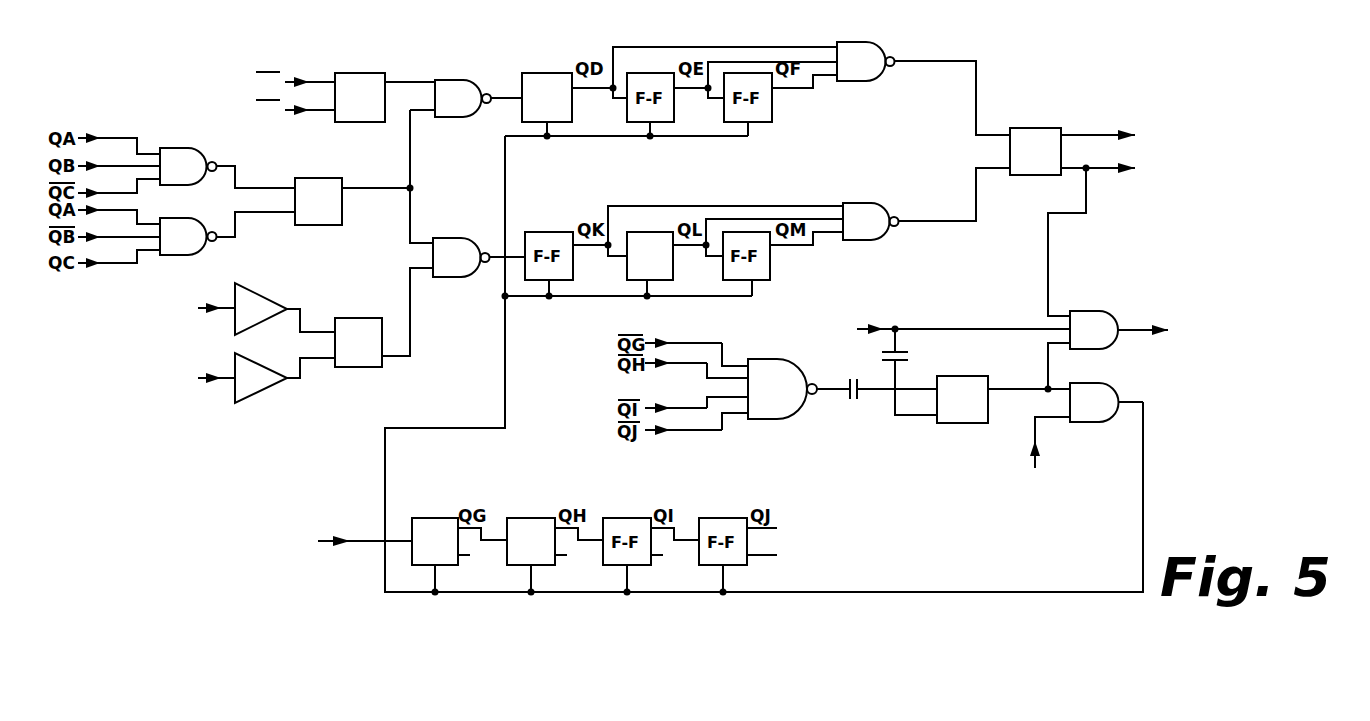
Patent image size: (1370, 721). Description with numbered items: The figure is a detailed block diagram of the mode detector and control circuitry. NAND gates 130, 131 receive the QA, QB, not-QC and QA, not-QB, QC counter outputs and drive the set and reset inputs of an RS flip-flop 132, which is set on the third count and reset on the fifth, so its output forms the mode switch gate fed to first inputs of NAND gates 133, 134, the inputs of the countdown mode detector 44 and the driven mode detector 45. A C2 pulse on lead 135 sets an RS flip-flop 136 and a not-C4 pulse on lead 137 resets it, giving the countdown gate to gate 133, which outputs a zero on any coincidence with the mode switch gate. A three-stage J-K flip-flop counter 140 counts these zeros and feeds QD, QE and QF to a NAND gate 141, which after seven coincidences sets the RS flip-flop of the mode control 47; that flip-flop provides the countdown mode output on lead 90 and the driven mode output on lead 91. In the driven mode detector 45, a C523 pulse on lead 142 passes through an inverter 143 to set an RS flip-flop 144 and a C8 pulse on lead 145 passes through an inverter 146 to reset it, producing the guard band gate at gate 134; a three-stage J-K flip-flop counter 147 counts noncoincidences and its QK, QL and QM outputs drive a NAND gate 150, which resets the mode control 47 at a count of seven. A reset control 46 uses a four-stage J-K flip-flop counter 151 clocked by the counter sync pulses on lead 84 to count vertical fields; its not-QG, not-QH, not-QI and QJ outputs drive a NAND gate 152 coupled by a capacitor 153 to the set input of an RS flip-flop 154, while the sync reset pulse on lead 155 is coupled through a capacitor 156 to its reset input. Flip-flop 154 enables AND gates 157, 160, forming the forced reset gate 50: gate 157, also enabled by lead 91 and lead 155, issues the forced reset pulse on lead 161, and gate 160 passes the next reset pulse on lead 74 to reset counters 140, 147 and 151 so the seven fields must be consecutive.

The countdown mode detector 44 is at (550, 60).
The driven mode detector 45 is at (723, 192).
The reset control 46 is at (508, 490).
The mode control 47 is at (1026, 128).
The forced reset gate 50 is at (1134, 270).
The lead 74 is at (1042, 451).
The lead 84 is at (335, 538).
The lead 90 is at (1124, 131).
The lead 91 is at (1125, 176).
The NAND gate 130 is at (173, 149).
The NAND gate 131 is at (205, 256).
The RS flip-flop 132 is at (330, 180).
The NAND gate 133 is at (448, 80).
The NAND gate 134 is at (447, 238).
The lead 135 is at (300, 78).
The RS flip-flop 136 is at (364, 74).
The lead 137 is at (292, 113).
The three-stage J-K flip-flop counter 140 is at (705, 40).
The NAND gate 141 is at (875, 44).
The lead 142 is at (206, 304).
The inverter 143 is at (269, 298).
The RS flip-flop 144 is at (364, 318).
The lead 145 is at (212, 383).
The inverter 146 is at (258, 401).
The three-stage J-K flip-flop counter 147 is at (684, 198).
The NAND gate 150 is at (854, 203).
The four-stage J-K flip-flop counter 151 is at (605, 498).
The NAND gate 152 is at (763, 419).
The capacitor 153 is at (847, 399).
The RS flip-flop 154 is at (962, 424).
The lead 155 is at (882, 308).
The capacitor 156 is at (909, 351).
The AND gate 157 is at (1101, 311).
The AND gate 160 is at (1112, 384).
The lead 161 is at (1162, 320).